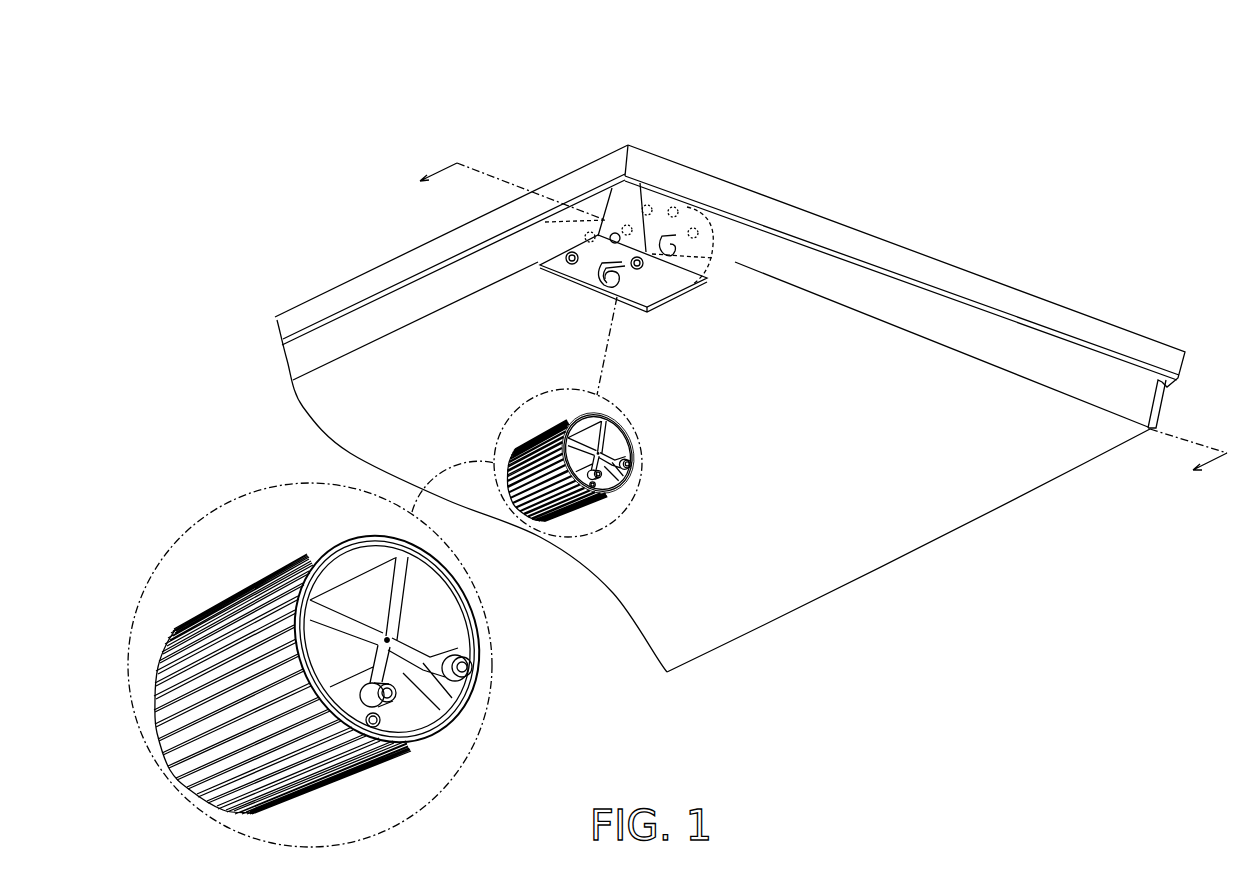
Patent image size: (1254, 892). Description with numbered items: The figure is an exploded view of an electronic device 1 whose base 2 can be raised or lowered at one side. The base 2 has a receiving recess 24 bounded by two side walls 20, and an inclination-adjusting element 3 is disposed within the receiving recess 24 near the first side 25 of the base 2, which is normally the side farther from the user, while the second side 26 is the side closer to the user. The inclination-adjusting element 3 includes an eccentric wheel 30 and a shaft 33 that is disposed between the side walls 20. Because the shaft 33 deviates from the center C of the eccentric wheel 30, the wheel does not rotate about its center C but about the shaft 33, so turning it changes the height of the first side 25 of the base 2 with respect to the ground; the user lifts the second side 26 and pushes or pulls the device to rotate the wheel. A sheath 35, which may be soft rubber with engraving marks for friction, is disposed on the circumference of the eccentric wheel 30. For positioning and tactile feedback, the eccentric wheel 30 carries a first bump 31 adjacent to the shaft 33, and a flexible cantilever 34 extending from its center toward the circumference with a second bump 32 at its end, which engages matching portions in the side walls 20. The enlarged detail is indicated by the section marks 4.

The electronic device 1 is at (86, 134).
The base 2 is at (917, 217).
The inclination-adjusting element 3 is at (660, 472).
The section line 4-4' 4 is at (816, 326).
The side walls 20 is at (688, 207).
The receiving recess 24 is at (644, 318).
The first side 25 is at (402, 304).
The second side 26 is at (1174, 411).
The eccentric wheel 30 is at (448, 588).
The first bump 31 is at (375, 727).
The second bump 32 is at (472, 667).
The shaft 33 is at (395, 700).
The flexible cantilever 34 is at (440, 652).
The sheath 35 is at (457, 716).
The center C is at (387, 640).